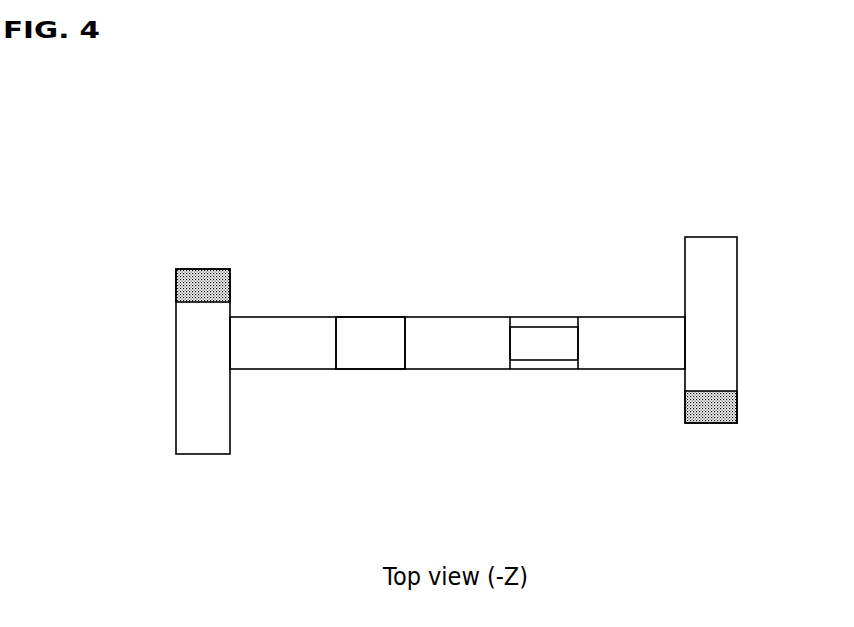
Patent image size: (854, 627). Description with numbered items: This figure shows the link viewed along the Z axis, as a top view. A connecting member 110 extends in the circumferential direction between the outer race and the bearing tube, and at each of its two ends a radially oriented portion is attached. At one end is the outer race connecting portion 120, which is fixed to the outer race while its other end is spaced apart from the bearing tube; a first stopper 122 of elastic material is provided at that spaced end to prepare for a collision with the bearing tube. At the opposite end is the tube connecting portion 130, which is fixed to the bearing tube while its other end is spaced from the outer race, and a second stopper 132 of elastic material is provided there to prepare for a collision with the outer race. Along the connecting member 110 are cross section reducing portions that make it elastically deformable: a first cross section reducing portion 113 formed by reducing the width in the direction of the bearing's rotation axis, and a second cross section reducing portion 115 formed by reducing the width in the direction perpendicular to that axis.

The connecting member 110 is at (437, 283).
The first cross section reducing portion 113 is at (371, 353).
The second cross section reducing portion 115 is at (548, 353).
The outer race connecting portion 120 is at (203, 440).
The first stopper 122 is at (207, 279).
The tube connecting portion 130 is at (712, 247).
The second stopper 132 is at (710, 412).